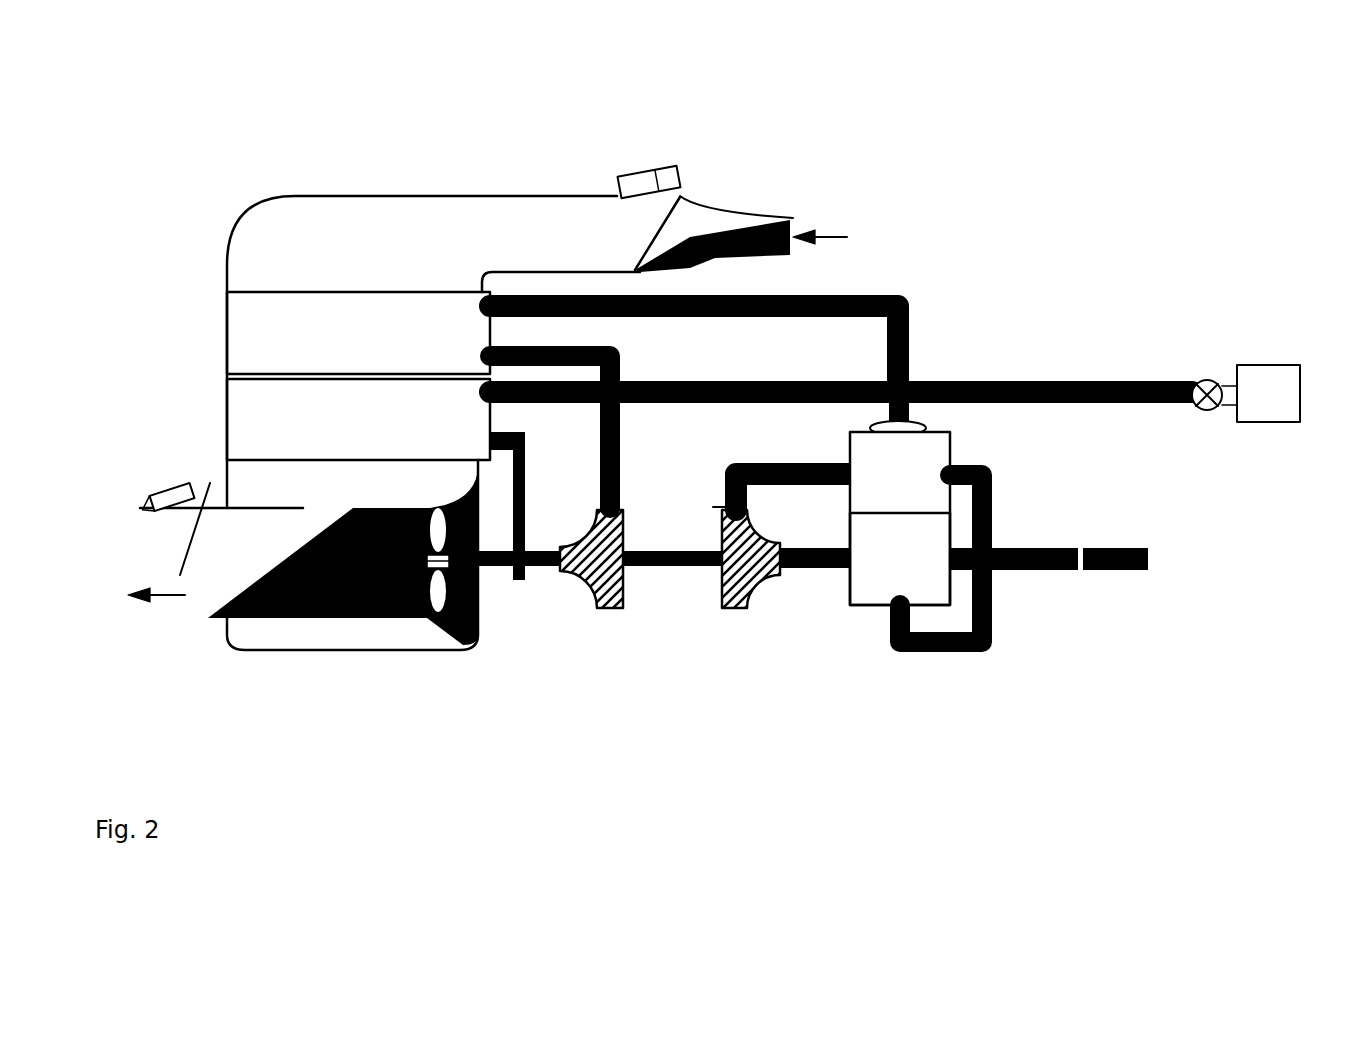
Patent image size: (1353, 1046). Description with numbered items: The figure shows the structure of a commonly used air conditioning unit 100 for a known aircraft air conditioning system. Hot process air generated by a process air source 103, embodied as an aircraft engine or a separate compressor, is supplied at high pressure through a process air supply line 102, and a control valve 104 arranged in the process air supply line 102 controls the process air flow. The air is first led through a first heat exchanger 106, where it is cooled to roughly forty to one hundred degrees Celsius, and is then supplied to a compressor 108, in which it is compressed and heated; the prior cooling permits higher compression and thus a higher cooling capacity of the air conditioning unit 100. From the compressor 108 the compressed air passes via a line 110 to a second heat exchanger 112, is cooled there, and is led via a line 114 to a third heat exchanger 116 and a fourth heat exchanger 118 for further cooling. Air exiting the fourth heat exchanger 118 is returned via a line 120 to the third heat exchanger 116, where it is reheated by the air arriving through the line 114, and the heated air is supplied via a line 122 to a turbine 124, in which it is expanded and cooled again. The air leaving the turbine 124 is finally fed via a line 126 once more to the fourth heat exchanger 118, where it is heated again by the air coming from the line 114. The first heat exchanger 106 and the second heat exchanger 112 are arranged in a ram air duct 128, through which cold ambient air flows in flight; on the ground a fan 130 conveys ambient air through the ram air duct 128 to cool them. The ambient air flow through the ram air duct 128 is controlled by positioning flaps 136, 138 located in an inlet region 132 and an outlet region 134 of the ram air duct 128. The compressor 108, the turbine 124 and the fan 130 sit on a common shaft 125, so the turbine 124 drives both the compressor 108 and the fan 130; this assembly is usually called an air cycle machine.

The air conditioning unit 100 is at (1090, 192).
The process air supply line 102 is at (955, 380).
The process air source 103 is at (1270, 377).
The control valve 104 is at (1203, 372).
The first heat exchanger 106 is at (228, 410).
The compressor 108 is at (610, 615).
The line 110 is at (620, 447).
The second heat exchanger 112 is at (228, 312).
The line 114 is at (825, 297).
The third heat exchanger 116 is at (930, 455).
The fourth heat exchanger 118 is at (865, 590).
The line 120 is at (992, 500).
The line 122 is at (775, 470).
The turbine 124 is at (722, 615).
The common shaft 125 is at (658, 552).
The line 126 is at (812, 533).
The ram air duct 128 is at (315, 196).
The fan 130 is at (440, 632).
The inlet region 132 is at (662, 167).
The outlet region 134 is at (195, 622).
The flap 136 is at (680, 217).
The flap 138 is at (195, 530).